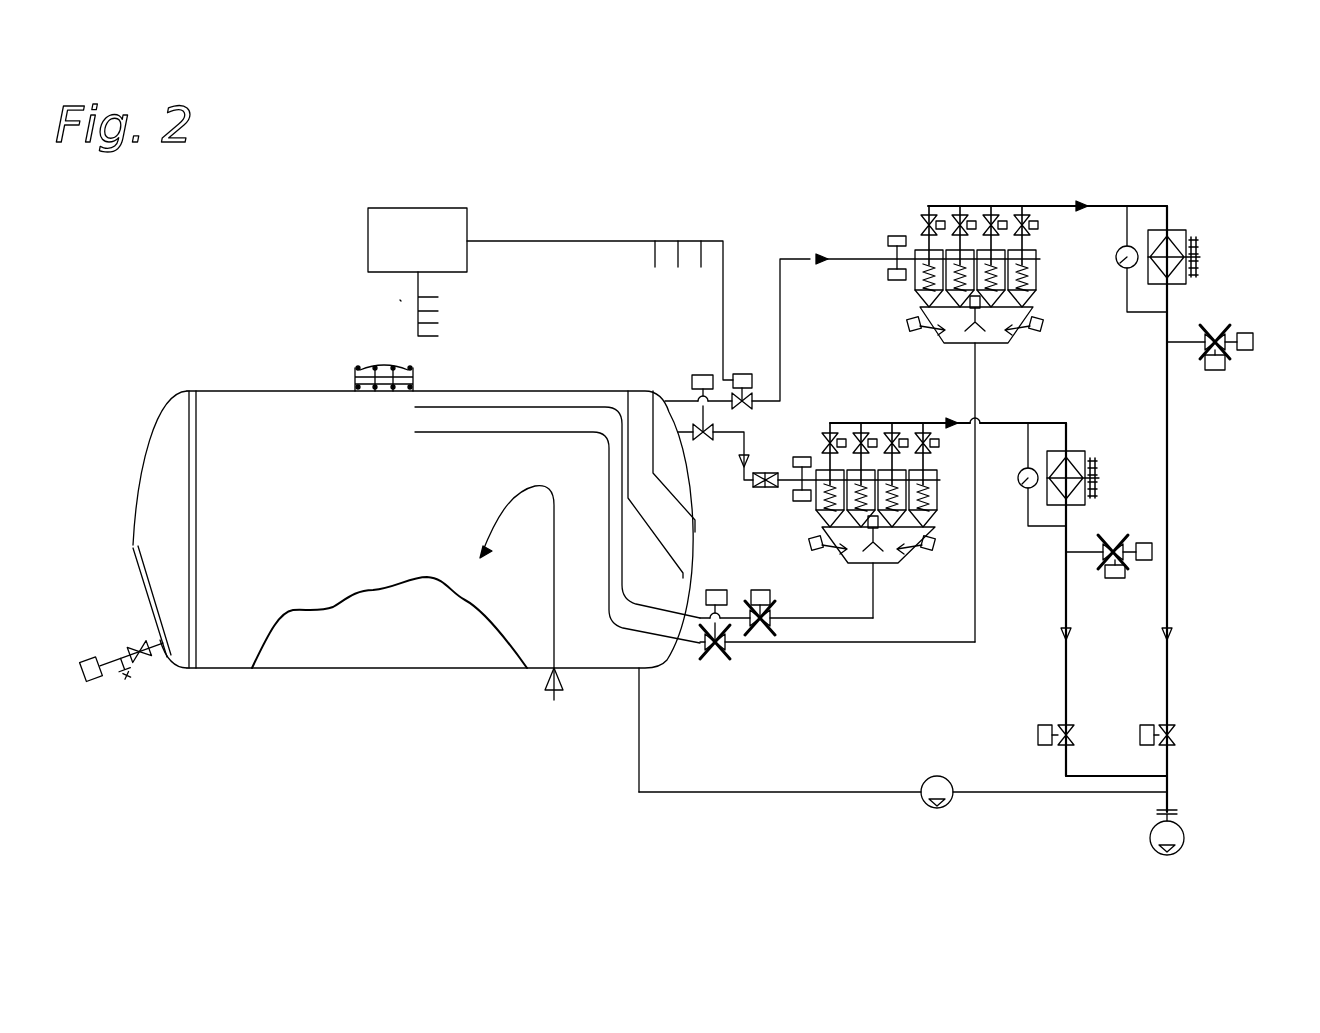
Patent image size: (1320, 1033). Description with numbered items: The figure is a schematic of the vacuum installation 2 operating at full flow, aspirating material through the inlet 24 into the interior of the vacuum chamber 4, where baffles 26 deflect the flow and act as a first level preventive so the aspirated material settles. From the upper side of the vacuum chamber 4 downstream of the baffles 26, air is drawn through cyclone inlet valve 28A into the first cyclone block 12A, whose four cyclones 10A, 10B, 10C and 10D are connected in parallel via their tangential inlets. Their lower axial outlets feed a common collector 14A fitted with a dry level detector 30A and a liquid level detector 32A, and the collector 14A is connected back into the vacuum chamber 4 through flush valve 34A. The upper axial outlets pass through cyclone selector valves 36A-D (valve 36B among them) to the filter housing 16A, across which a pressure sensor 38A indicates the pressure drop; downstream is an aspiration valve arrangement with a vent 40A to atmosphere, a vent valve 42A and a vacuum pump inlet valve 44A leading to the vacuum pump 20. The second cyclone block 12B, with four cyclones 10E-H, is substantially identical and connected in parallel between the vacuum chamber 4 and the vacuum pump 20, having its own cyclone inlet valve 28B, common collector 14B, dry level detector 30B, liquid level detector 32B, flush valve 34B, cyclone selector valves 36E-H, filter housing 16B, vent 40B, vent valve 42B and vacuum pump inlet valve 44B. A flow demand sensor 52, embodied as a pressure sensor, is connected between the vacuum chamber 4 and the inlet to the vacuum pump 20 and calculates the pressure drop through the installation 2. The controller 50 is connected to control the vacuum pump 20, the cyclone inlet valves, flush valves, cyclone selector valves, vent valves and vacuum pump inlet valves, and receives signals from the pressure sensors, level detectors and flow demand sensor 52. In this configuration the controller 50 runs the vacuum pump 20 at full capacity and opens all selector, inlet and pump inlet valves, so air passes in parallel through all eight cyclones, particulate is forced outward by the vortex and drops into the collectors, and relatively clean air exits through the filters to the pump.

The vacuum installation 2 is at (196, 304).
The vacuum chamber 4 is at (265, 413).
The cyclone 10A is at (922, 250).
The cyclone 10B is at (955, 250).
The cyclone 10C is at (985, 250).
The cyclone 10D is at (1015, 250).
The cyclones 10E-H is at (818, 510).
The first cyclone block 12A is at (1045, 195).
The second cyclone block 12B is at (915, 580).
The common collector 14A is at (990, 344).
The common collector 14B is at (880, 565).
The filter housing 16A is at (1180, 258).
The filter housing 16B is at (1080, 455).
The vacuum pump 20 is at (1175, 842).
The inlet 24 is at (558, 682).
The baffles 26 is at (617, 402).
The cyclone inlet valve 28A is at (732, 380).
The cyclone inlet valve 28B is at (697, 412).
The dry level detector 30A is at (1038, 328).
The dry level detector 30B is at (930, 547).
The liquid level detector 32A is at (912, 330).
The liquid level detector 32B is at (815, 549).
The flush valve 34A is at (725, 650).
The flush valve 34B is at (760, 600).
The cyclone selector valves 36A-D is at (1035, 238).
The cyclone selector valves 36E-H is at (920, 438).
The cyclone selector valve 36B is at (1019, 475).
The pressure sensor 38A is at (1116, 256).
The vent 40A is at (1253, 338).
The vent 40B is at (1140, 543).
The vent valve 42A is at (1215, 370).
The vent valve 42B is at (1113, 578).
The vacuum pump inlet valve 44A is at (1172, 735).
The vacuum pump inlet valve 44B is at (1045, 728).
The controller 50 is at (422, 225).
The flow demand sensor 52 is at (945, 805).